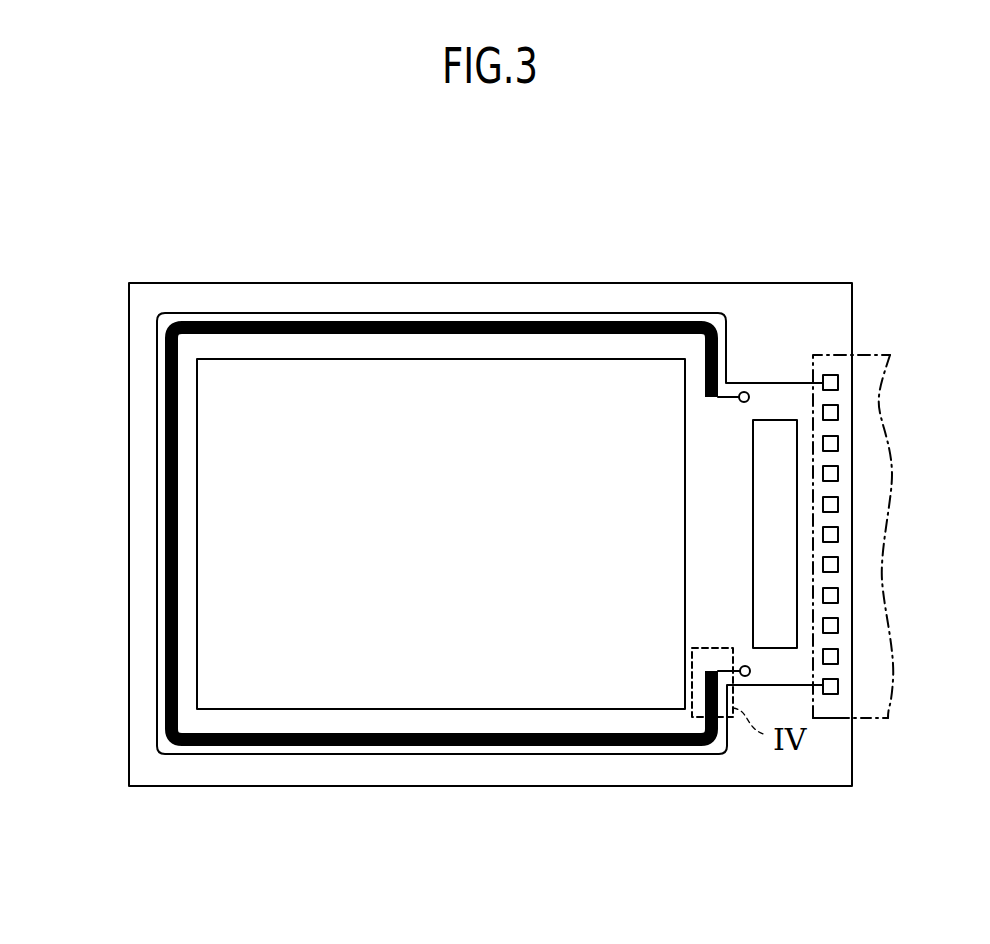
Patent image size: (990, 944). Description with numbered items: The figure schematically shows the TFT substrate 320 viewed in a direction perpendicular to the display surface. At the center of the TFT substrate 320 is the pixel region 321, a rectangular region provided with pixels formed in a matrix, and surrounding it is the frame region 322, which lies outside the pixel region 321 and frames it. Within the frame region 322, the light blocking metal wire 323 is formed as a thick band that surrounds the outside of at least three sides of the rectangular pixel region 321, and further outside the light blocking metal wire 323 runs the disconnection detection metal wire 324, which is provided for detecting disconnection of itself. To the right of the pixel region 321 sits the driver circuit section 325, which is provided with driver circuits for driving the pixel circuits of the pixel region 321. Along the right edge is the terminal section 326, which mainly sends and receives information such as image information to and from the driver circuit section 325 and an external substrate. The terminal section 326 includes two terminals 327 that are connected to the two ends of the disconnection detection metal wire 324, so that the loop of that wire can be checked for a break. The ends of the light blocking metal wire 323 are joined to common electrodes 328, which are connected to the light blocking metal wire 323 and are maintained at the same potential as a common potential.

The TFT substrate 320 is at (497, 238).
The pixel region 321 is at (404, 666).
The frame region 322 is at (291, 713).
The light blocking metal wire 323 is at (508, 741).
The disconnection detection metal wire 324 is at (618, 756).
The driver circuit section 325 is at (779, 465).
The terminal section 326 is at (866, 590).
The terminals 327 is at (838, 384).
The common electrodes 328 is at (745, 391).